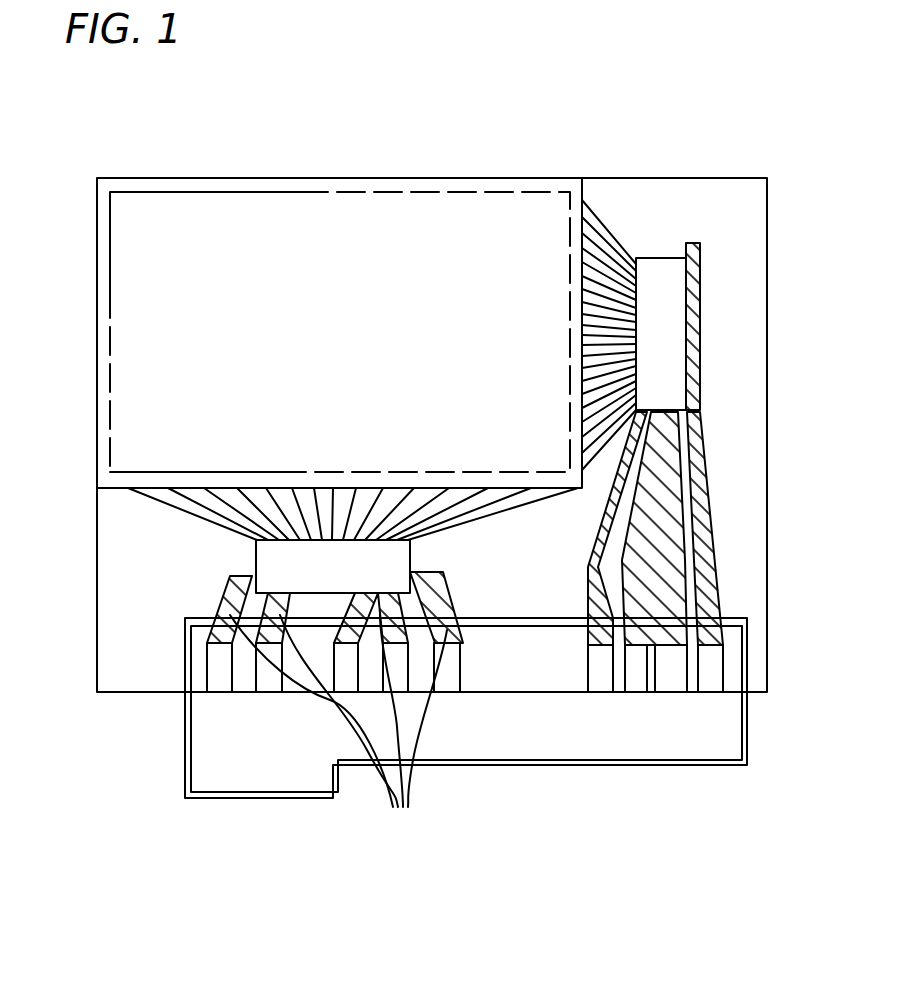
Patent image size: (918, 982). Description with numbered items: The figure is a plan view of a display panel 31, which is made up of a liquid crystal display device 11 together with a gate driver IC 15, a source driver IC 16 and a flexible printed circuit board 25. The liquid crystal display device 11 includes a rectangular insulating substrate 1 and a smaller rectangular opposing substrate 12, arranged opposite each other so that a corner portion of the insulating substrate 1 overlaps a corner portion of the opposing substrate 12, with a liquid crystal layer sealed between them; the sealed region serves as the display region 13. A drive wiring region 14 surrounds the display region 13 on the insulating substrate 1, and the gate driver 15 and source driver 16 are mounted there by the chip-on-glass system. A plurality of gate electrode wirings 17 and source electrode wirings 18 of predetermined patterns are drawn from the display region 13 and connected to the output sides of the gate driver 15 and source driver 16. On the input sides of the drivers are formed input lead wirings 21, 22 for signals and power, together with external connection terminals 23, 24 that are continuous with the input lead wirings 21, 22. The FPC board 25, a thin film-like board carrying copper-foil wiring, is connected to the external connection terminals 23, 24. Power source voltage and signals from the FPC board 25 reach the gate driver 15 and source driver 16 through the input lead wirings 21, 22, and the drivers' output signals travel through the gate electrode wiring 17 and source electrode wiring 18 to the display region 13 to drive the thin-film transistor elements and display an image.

The insulating substrate 1 is at (668, 200).
The display panel 31 is at (389, 132).
The liquid crystal display device 11 is at (97, 282).
The opposing substrate 12 is at (486, 217).
The display region 13 is at (205, 192).
The drive wiring region 14 is at (505, 590).
The gate driver IC 15 is at (673, 313).
The source driver IC 16 is at (262, 558).
The gate electrode wiring 17 is at (600, 218).
The source electrode wiring 18 is at (175, 509).
The input lead wiring 21 is at (707, 483).
The input lead wiring 22 is at (338, 730).
The external connection terminal 23 is at (713, 687).
The external connection terminal 24 is at (215, 674).
The flexible printed circuit board 25 is at (255, 765).